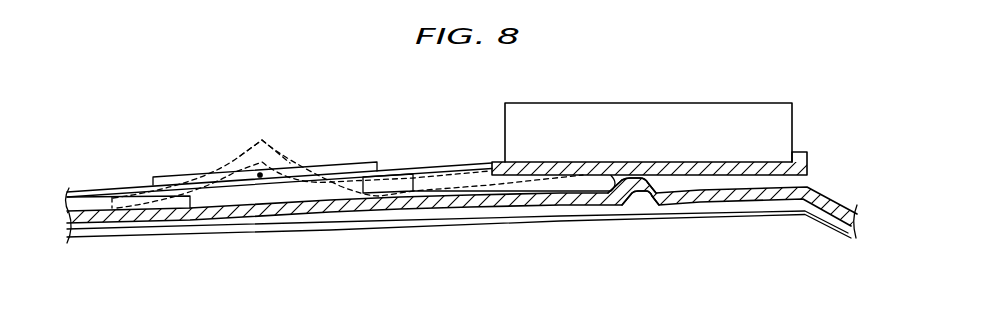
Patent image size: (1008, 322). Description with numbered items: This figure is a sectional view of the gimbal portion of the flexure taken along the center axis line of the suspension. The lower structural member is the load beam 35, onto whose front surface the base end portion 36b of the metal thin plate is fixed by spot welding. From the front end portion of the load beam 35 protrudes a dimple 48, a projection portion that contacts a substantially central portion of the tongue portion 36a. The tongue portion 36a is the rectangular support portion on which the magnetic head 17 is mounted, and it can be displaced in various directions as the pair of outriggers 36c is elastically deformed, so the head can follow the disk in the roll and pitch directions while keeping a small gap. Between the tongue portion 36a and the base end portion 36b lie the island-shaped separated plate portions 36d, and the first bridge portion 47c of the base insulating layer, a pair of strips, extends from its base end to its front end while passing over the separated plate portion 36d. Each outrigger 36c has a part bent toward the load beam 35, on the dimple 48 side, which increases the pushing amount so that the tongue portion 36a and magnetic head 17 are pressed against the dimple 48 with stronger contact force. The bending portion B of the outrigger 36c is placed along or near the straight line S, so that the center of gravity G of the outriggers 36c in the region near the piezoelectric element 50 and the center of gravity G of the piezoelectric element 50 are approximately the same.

The magnetic head 17 is at (586, 117).
The dimple 48 is at (658, 177).
The tongue portion 36a is at (742, 161).
The base end portion 36b is at (95, 203).
The outriggers 36c is at (443, 184).
The separated plate portion 36d is at (375, 188).
The load beam 35 is at (522, 203).
The piezoelectric element 50 is at (361, 162).
The first bridge portion 47c is at (461, 163).
The bending portion B is at (262, 140).
The center of gravity G is at (260, 177).